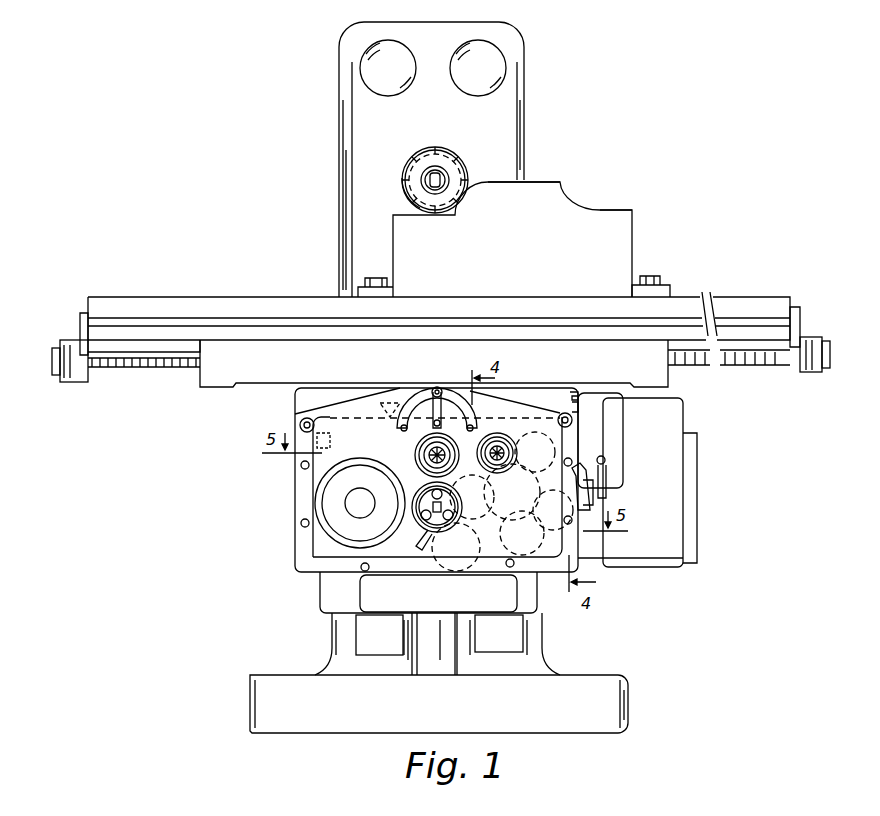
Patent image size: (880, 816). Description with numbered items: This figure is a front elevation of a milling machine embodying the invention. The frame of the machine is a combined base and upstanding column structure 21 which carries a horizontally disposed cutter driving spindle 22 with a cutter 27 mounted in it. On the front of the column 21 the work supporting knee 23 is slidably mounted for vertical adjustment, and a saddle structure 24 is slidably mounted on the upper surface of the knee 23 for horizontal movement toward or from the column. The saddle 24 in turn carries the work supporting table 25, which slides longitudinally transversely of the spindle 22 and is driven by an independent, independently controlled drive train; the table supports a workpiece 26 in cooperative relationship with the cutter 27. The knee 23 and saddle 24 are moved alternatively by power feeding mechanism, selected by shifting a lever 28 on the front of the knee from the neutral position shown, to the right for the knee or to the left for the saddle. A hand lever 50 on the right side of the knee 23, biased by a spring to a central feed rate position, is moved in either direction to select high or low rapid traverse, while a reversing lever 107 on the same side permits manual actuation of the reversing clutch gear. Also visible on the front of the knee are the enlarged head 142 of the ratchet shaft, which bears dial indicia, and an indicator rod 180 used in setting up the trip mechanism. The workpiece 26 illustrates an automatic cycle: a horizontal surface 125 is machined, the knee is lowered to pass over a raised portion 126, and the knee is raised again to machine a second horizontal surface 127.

The combined base and upstanding column structure 21 is at (362, 241).
The cutter driving spindle 22 is at (406, 170).
The cutter 27 is at (443, 160).
The horizontal surface 125 is at (412, 210).
The workpiece 26 is at (556, 216).
The raised portion 126 is at (540, 182).
The second horizontal surface 127 is at (606, 211).
The work supporting table 25 is at (205, 300).
The saddle structure 24 is at (222, 388).
The work supporting knee 23 is at (305, 553).
The lever 28 is at (441, 390).
The head 142 is at (426, 528).
The indicator rod 180 is at (447, 560).
The hand lever 50 is at (580, 470).
The reversing lever 107 is at (606, 461).